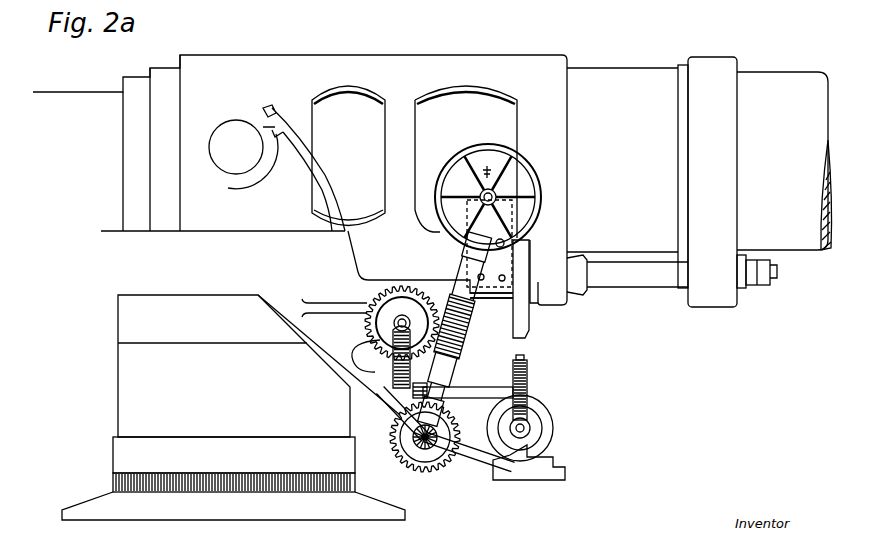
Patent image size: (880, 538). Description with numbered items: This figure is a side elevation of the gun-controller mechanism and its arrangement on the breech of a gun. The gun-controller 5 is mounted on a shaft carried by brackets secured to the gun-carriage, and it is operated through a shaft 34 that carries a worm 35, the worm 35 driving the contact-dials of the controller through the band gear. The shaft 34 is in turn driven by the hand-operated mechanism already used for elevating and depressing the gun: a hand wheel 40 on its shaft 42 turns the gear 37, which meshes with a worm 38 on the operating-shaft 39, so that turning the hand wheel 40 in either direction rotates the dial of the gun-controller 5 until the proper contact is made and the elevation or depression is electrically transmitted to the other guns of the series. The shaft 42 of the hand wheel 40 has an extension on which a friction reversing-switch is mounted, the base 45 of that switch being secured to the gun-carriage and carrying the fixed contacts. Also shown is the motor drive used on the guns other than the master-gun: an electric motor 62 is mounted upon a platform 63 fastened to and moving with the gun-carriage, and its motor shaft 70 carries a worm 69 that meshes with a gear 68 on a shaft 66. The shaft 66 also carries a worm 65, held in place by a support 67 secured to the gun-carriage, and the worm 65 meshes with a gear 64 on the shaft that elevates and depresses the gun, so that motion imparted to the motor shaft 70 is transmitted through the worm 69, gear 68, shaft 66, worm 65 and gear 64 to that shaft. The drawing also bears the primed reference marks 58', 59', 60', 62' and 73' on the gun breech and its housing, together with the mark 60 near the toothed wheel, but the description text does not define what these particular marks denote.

The gun-controller 5 is at (407, 375).
The shaft 34 is at (398, 323).
The worm 35 is at (392, 322).
The gear 37 is at (405, 290).
The worm 38 is at (462, 338).
The operating-shaft 39 is at (485, 298).
The hand wheel 40 is at (487, 143).
The shaft of the hand-wheel 42 is at (497, 196).
The base 45 is at (497, 268).
The cylinder pocket 58' is at (462, 119).
The cylinder pocket 59' is at (348, 114).
The curved arm 60' is at (304, 116).
The pivot disc 62' is at (243, 96).
The shaft 73' is at (624, 144).
The toothed wheel 60 is at (409, 452).
The electric motor 62 is at (546, 428).
The platform 63 is at (553, 458).
The gear 64 is at (420, 450).
The worm 65 is at (402, 383).
The shaft 66 is at (468, 390).
The support 67 is at (408, 450).
The gear 68 is at (528, 368).
The worm 69 is at (510, 430).
The motor shaft 70 is at (524, 438).